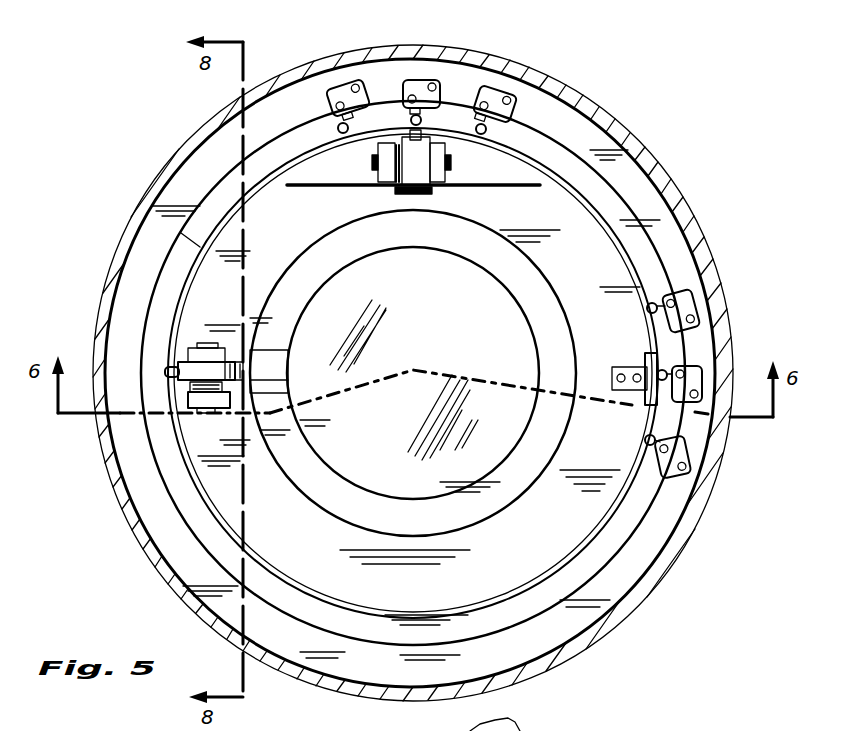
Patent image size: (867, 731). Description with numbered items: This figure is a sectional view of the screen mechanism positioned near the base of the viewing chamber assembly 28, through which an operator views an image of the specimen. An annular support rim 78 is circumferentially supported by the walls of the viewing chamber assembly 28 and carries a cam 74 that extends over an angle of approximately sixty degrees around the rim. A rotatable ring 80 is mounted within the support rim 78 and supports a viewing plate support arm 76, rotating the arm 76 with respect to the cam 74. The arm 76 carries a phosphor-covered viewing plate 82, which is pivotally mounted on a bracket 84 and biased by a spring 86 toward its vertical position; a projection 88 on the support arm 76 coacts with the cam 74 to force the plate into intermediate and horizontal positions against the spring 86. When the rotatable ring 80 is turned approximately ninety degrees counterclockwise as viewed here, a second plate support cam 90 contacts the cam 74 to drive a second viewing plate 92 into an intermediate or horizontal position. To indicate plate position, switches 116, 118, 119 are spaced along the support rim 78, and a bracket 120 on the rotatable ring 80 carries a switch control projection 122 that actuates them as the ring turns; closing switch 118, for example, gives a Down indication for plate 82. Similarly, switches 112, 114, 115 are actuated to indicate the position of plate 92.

The viewing chamber assembly 28 is at (300, 675).
The cam 74 is at (185, 494).
The viewing plate support arm 76 is at (168, 363).
The support rim 78 is at (205, 590).
The rotatable ring 80 is at (512, 558).
The viewing plate 82 is at (485, 293).
The bracket 84 is at (196, 400).
The spring 86 is at (190, 388).
The projection 88 is at (168, 372).
The second plate support cam 90 is at (432, 176).
The viewing plate 92 is at (545, 184).
The switch 112 is at (345, 82).
The switch 114 is at (418, 80).
The switch 115 is at (492, 88).
The switch 116 is at (695, 298).
The switch 118 is at (704, 378).
The switch 119 is at (690, 456).
The bracket 120 is at (640, 366).
The switch control projection 122 is at (655, 412).